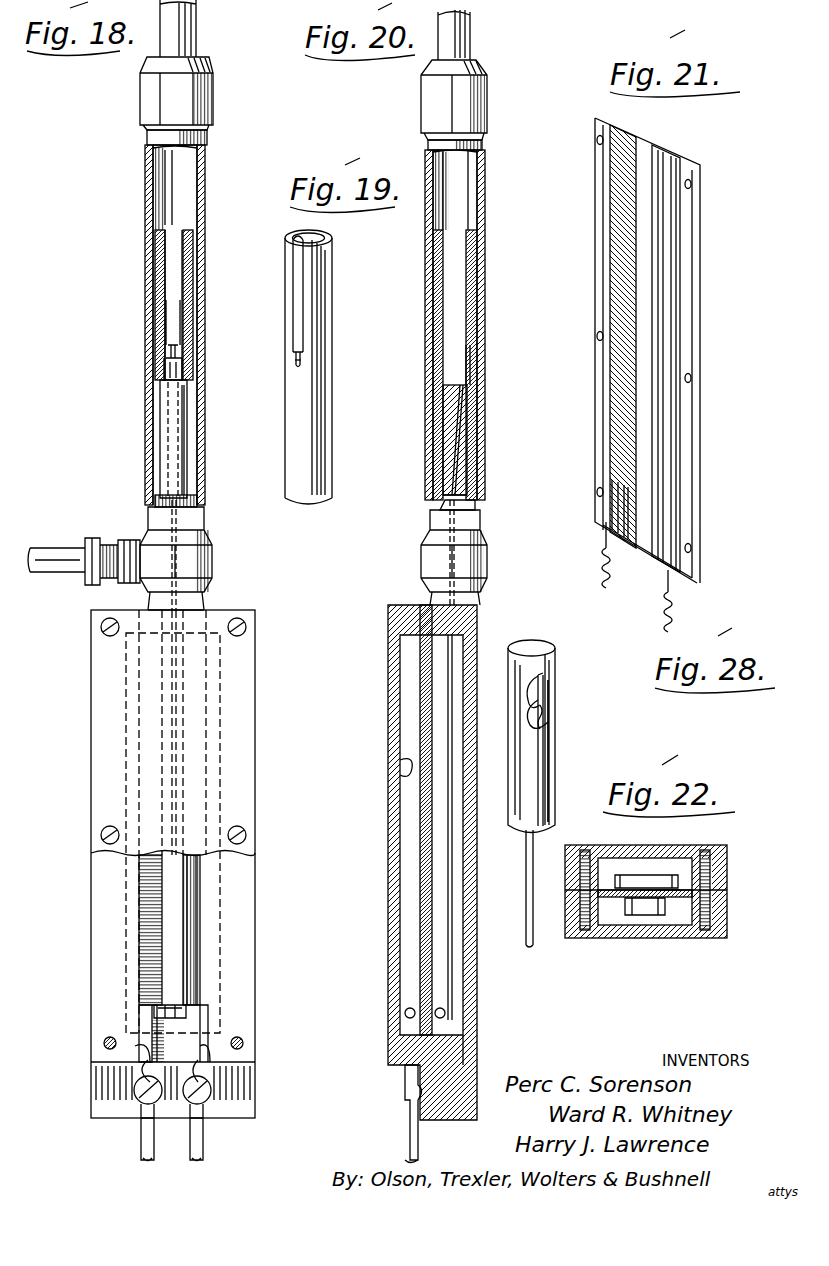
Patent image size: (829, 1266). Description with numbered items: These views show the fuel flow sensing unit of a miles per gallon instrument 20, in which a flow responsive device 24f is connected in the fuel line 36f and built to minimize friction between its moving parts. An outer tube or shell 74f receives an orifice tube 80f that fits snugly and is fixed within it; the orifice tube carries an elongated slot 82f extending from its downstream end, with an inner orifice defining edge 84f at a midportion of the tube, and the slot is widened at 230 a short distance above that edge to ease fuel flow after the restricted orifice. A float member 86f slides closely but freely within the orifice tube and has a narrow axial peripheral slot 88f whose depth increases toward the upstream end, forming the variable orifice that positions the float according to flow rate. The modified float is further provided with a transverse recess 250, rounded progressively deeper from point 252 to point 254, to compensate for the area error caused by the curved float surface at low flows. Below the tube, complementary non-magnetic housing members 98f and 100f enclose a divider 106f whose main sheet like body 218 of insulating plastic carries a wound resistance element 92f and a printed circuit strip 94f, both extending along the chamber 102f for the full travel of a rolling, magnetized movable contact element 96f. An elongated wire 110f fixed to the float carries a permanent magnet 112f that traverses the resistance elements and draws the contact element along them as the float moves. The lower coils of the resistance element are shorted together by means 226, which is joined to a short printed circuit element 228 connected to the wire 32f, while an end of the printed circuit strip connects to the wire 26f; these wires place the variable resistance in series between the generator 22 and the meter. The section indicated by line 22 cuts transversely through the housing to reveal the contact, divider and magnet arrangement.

In FIG. 18, the miles per gallon instrument 20 is at (162, 22).
In FIG. 18, the flow responsive device 24f is at (209, 193).
In FIG. 18, the outer tube or shell 74f is at (206, 236).
In FIG. 20, the outer tube or shell 74f is at (483, 202).
In FIG. 18, the orifice tube 80f is at (190, 280).
In FIG. 19, the orifice tube 80f is at (320, 430).
In FIG. 20, the orifice tube 80f is at (436, 253).
In FIG. 18, the widened portion of slot 230 is at (182, 350).
In FIG. 19, the widened portion of slot 230 is at (310, 358).
In FIG. 18, the orifice defining edge 84f is at (178, 356).
In FIG. 19, the orifice defining edge 84f is at (292, 362).
In FIG. 18, the float member 86f is at (186, 449).
In FIG. 20, the float member 86f is at (444, 460).
In FIG. 28, the float member 86f is at (549, 800).
In FIG. 18, the fuel line 36f is at (58, 556).
In FIG. 18, the housing member 98f is at (225, 746).
In FIG. 20, the housing member 98f is at (391, 866).
In FIG. 22, the housing member 98f is at (660, 938).
In FIG. 18, the resistance element 92f is at (148, 891).
In FIG. 21, the resistance element 92f is at (616, 441).
In FIG. 18, the printed circuit strip 94f is at (200, 901).
In FIG. 21, the printed circuit strip 94f is at (668, 430).
In FIG. 18, the generator 22 is at (63, 997).
In FIG. 18, the movable contact element 96f is at (200, 1016).
In FIG. 20, the movable contact element 96f is at (405, 1013).
In FIG. 22, the movable contact element 96f is at (638, 935).
In FIG. 18, the shorting means 226 is at (145, 1016).
In FIG. 21, the shorting means 226 is at (612, 497).
In FIG. 18, the short printed circuit element 228 is at (142, 1044).
In FIG. 21, the short printed circuit element 228 is at (601, 523).
In FIG. 18, the wire 32f is at (140, 1148).
In FIG. 18, the wire 26f is at (200, 1148).
In FIG. 19, the slot or orifice 82f is at (305, 292).
In FIG. 20, the point 252 is at (462, 420).
In FIG. 28, the point 252 is at (548, 720).
In FIG. 20, the channel or chamber 102f is at (400, 772).
In FIG. 20, the divider 106f is at (420, 820).
In FIG. 21, the divider 106f is at (703, 297).
In FIG. 22, the divider 106f is at (685, 886).
In FIG. 20, the wire or rod 110f is at (453, 873).
In FIG. 28, the wire or rod 110f is at (535, 846).
In FIG. 22, the wire or rod 110f is at (688, 848).
In FIG. 20, the housing member 100f is at (473, 946).
In FIG. 22, the housing member 100f is at (697, 846).
In FIG. 20, the magnet 112f is at (446, 1008).
In FIG. 22, the magnet 112f is at (633, 877).
In FIG. 21, the main sheet like body 218 is at (690, 505).
In FIG. 28, the transverse recess 250 is at (540, 676).
In FIG. 28, the point 254 is at (547, 742).
In FIG. 28, the peripheral slot 88f is at (547, 762).